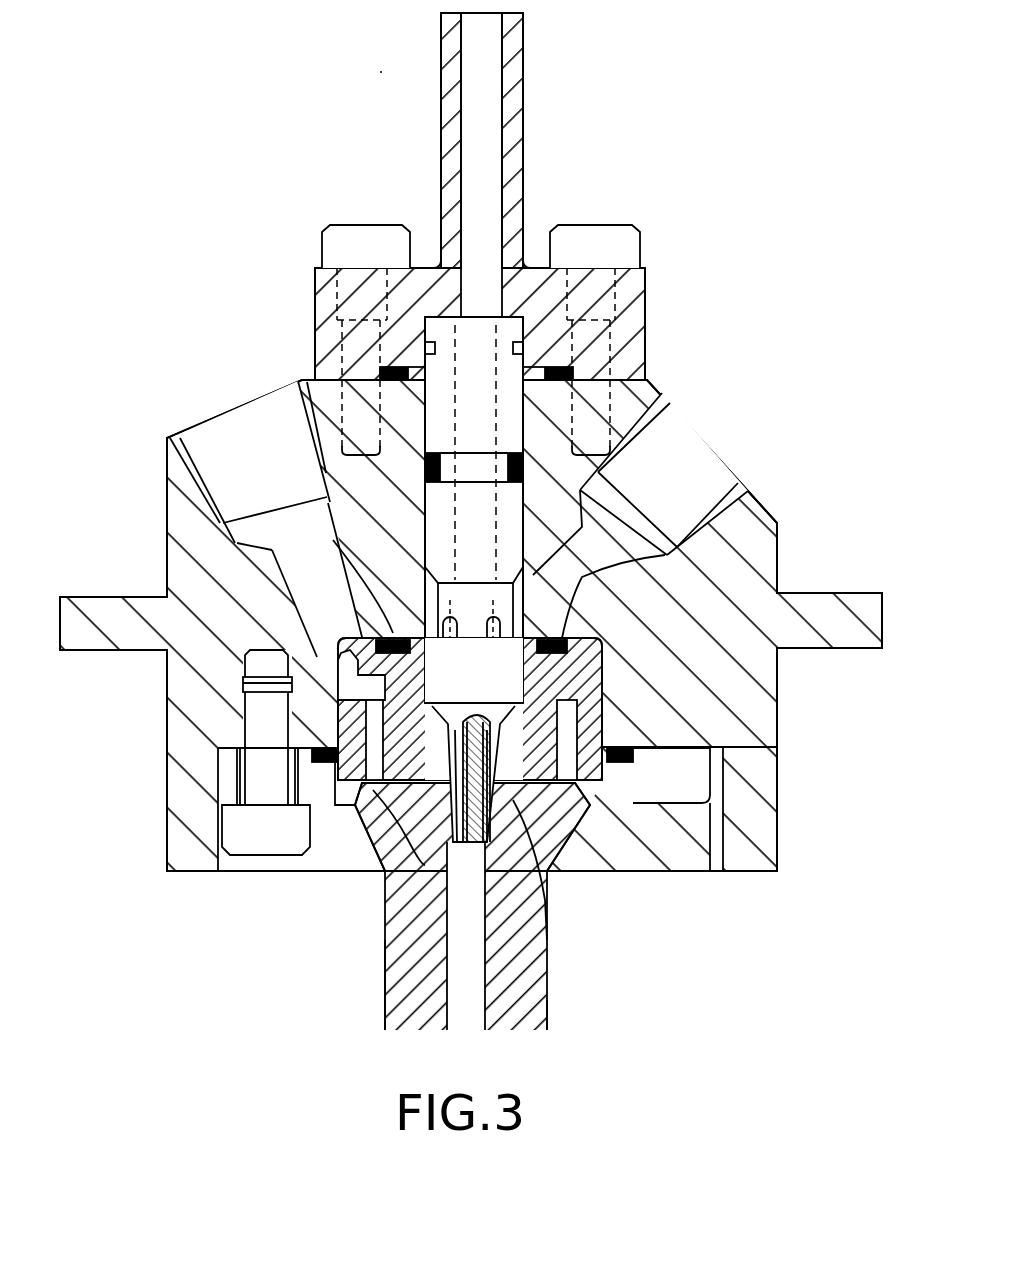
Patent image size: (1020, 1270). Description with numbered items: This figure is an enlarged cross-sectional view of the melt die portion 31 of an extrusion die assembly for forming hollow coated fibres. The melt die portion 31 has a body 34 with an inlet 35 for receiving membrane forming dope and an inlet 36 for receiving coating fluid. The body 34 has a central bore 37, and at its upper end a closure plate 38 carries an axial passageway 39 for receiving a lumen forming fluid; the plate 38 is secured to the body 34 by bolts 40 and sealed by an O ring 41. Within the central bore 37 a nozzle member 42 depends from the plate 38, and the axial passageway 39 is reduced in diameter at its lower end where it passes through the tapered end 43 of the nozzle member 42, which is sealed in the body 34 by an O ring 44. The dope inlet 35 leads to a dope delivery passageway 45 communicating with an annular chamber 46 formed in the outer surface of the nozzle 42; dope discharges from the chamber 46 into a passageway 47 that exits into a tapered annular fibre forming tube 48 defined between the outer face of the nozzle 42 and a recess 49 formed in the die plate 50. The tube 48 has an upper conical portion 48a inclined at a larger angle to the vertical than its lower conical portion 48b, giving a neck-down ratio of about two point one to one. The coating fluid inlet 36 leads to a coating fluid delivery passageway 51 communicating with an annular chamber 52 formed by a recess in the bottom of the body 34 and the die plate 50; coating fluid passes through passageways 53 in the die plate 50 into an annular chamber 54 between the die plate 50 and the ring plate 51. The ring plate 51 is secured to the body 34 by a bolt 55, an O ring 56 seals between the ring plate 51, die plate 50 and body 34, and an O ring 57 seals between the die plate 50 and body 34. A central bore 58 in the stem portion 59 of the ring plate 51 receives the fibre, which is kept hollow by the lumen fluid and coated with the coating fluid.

The melt die portion 31 is at (292, 912).
The body 34 is at (765, 534).
The inlet 35 is at (680, 432).
The inlet 36 is at (215, 432).
The central bore 37 is at (524, 430).
The closure plate 38 is at (647, 282).
The axial passageway 39 is at (500, 146).
The bolts 40 is at (343, 230).
The O ring 41 is at (395, 372).
The nozzle member 42 is at (456, 526).
The tapered end 43 is at (385, 970).
The O ring 44 is at (505, 465).
The dope delivery passageway 45 is at (603, 553).
The annular chamber 46 is at (588, 533).
The passageway 47 is at (425, 683).
The tapered annular fibre forming tube 48 is at (530, 815).
The upper conical portion 48a is at (390, 862).
The lower conical portion 48b is at (547, 940).
The recess 49 is at (385, 1025).
The die plate 50 is at (560, 800).
The coating fluid delivery passageway 51 is at (298, 575).
The annular chamber 52 is at (338, 640).
The passageways 53 is at (640, 745).
The annular chamber 54 is at (549, 875).
The bolt 55 is at (238, 858).
The O ring 56 is at (620, 763).
The O ring 57 is at (310, 530).
The central bore 58 is at (473, 998).
The stem portion 59 is at (548, 1025).